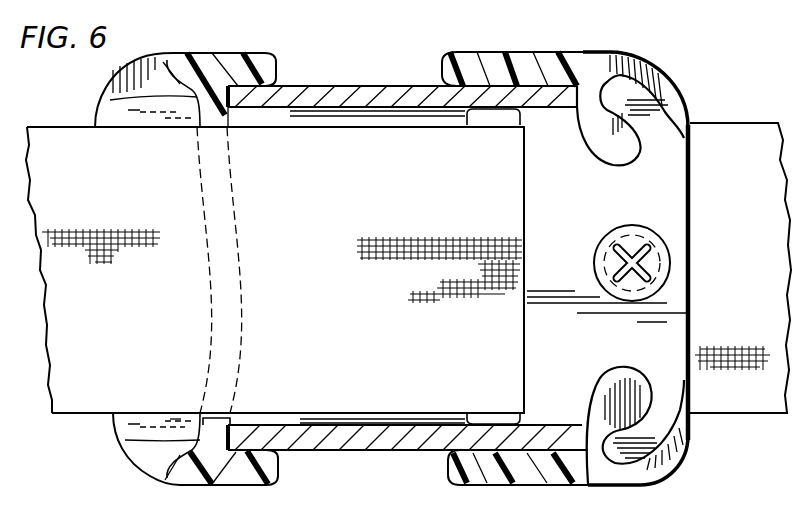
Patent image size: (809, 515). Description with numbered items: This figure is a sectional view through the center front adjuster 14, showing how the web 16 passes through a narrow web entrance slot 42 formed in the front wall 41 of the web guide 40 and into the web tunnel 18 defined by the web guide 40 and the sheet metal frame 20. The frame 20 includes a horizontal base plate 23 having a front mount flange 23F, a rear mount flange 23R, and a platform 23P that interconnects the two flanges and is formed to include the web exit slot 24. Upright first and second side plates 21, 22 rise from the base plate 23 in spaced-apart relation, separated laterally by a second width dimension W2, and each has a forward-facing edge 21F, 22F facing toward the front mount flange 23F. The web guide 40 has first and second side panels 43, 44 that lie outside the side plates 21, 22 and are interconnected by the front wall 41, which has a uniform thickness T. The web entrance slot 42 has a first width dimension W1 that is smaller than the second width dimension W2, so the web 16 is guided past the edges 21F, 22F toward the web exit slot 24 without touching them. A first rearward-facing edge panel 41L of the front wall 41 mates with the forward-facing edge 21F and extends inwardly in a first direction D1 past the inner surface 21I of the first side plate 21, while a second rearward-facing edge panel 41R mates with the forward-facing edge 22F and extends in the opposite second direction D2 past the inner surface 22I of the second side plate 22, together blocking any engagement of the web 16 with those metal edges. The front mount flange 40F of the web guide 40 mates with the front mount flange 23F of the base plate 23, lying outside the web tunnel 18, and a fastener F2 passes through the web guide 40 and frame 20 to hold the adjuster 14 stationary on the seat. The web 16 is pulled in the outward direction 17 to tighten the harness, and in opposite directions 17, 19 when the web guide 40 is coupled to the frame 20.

The center front adjuster 14 is at (681, 59).
The web 16 is at (736, 133).
The outward direction 17 is at (108, 288).
The web tunnel 18 is at (290, 168).
The direction 19 is at (760, 262).
The frame 20 is at (123, 458).
The first side plate 21 is at (333, 84).
The first forward-facing edge 21F is at (207, 56).
The inner surface of first side plate 21I is at (419, 117).
The second side plate 22 is at (372, 456).
The second forward-facing edge 22F is at (213, 428).
The inner surface of second side plate 22I is at (407, 425).
The horizontal base plate 23 is at (602, 51).
The front mount flange 23F is at (123, 450).
The platform 23P is at (297, 117).
The rear mount flange 23R is at (681, 89).
The web exit slot 24 is at (487, 116).
The web guide 40 is at (267, 489).
The front mount flange of web guide 40F is at (147, 80).
The front wall 41 is at (192, 443).
The first rearward-facing edge panel 41L is at (110, 100).
The second rearward-facing edge panel 41R is at (125, 440).
The web entrance slot 42 is at (215, 419).
The first side panel 43 is at (193, 50).
The second side panel 44 is at (180, 488).
The first direction D1 is at (340, 127).
The second direction D2 is at (340, 410).
The fastener F2 is at (646, 236).
The thickness T is at (180, 255).
The first width dimension W1 is at (175, 129).
The second width dimension W2 is at (134, 421).